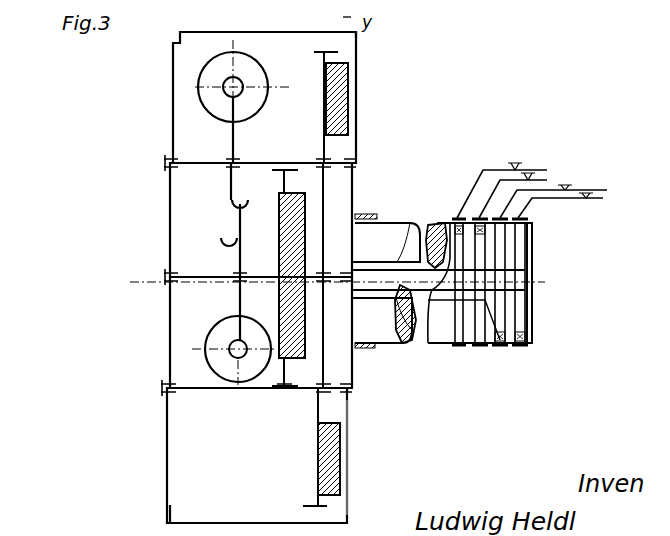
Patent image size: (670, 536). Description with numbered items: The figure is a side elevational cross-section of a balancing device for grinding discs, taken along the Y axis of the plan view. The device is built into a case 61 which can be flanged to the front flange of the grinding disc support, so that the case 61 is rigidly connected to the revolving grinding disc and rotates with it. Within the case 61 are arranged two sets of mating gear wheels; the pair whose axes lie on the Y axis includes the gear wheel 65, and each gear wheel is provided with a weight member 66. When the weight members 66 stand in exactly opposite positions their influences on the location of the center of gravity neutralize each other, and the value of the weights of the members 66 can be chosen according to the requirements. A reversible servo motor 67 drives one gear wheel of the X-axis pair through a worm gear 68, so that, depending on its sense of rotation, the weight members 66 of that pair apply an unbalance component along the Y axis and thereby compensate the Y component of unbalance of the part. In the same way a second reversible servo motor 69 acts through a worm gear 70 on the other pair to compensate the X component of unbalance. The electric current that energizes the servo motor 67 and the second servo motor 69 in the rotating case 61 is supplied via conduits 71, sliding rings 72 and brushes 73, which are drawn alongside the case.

The case 61 is at (348, 470).
The gear wheel 65 is at (493, 7).
The weight member 66 is at (341, 105).
The reversible servo motor 67 is at (218, 360).
The worm gear 68 is at (238, 298).
The second reversible servo motor 69 is at (215, 80).
The worm gear 70 is at (233, 135).
The conduits 71 is at (403, 262).
The sliding rings 72 is at (520, 346).
The brushes 73 is at (518, 218).